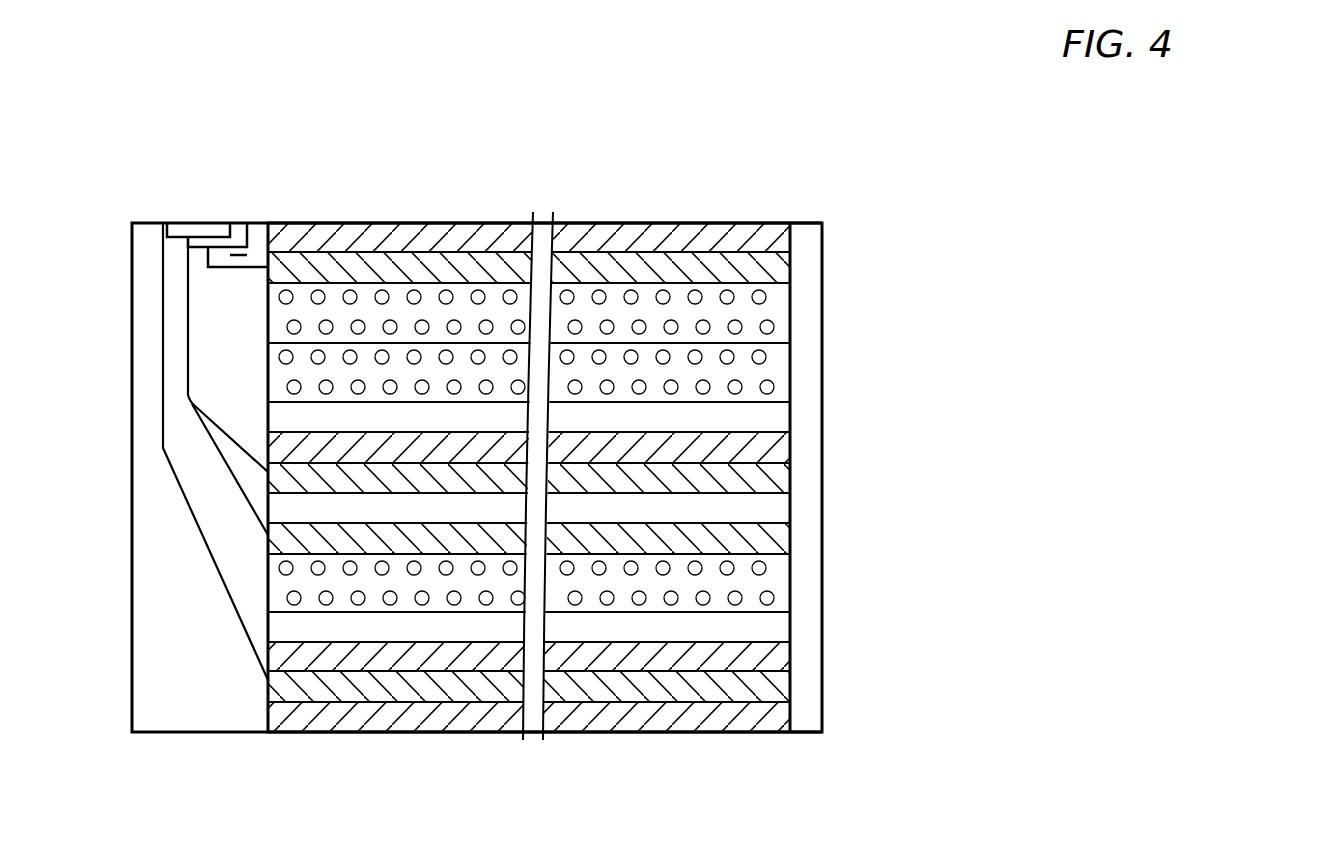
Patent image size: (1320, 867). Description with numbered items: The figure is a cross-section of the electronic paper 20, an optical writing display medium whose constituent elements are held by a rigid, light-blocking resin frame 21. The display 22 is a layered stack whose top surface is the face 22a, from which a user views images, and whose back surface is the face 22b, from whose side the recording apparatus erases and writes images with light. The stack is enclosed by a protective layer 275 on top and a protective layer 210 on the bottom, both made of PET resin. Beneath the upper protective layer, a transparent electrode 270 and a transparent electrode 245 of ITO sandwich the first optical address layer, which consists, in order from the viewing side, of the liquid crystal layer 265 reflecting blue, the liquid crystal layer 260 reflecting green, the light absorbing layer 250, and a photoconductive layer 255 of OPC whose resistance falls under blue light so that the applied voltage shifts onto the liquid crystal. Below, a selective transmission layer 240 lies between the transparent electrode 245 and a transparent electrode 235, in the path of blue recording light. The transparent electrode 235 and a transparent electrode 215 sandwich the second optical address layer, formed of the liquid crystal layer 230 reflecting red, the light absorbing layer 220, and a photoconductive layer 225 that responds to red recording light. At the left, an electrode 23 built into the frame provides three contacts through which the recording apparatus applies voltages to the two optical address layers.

The electronic paper 20 is at (608, 145).
The frame 21 is at (176, 733).
The display 22 is at (387, 223).
The face (first face) 22a is at (600, 207).
The face (second face) 22b is at (580, 748).
The electrode 23 is at (240, 245).
The protective layer 210 is at (773, 713).
The transparent electrode 215 is at (773, 687).
The light absorbing layer (red) 220 is at (773, 627).
The photoconductive layer 225 is at (773, 655).
The liquid crystal layer (red) 230 is at (780, 577).
The transparent electrode 235 is at (780, 542).
The selective transmission layer 240 is at (773, 510).
The transparent electrode 245 is at (773, 477).
The light absorbing layer (blue, green) 250 is at (788, 417).
The photoconductive layer 255 is at (780, 450).
The liquid crystal layer (green) 260 is at (780, 363).
The liquid crystal layer (blue) 265 is at (777, 300).
The transparent electrode 270 is at (785, 262).
The protective layer 275 is at (785, 235).